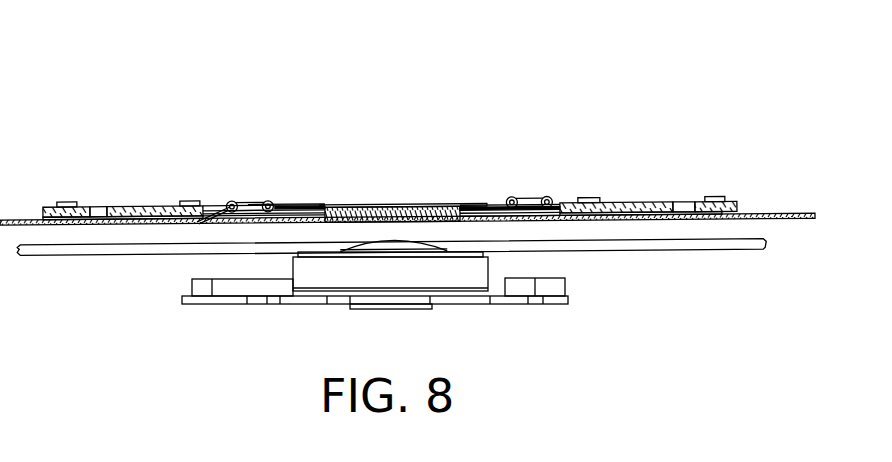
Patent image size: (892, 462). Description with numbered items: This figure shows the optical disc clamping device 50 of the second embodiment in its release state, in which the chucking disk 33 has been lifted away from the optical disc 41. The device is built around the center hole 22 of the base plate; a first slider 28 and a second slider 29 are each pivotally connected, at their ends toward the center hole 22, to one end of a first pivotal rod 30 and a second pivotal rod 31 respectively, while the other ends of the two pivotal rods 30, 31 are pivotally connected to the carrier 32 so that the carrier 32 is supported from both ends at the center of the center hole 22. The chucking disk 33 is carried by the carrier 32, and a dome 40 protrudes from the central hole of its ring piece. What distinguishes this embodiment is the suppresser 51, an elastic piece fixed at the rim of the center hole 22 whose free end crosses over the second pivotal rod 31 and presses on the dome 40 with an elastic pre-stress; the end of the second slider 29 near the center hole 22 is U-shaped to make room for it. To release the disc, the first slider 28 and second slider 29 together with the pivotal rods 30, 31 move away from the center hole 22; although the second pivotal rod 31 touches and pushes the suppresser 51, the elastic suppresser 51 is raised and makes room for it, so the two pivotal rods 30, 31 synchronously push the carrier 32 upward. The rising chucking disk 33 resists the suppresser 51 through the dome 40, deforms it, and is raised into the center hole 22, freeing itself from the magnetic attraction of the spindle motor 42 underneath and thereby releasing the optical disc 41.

The center hole 22 is at (557, 223).
The first slider 28 is at (643, 203).
The second slider 29 is at (138, 202).
The first pivotal rod 30 is at (523, 200).
The second pivotal rod 31 is at (228, 203).
The carrier 32 is at (503, 202).
The chucking disk 33 is at (413, 205).
The dome 40 is at (391, 200).
The optical disc 41 is at (677, 250).
The spindle motor 42 is at (488, 270).
The optical disc clamping device 50 is at (663, 118).
The suppresser 51 is at (336, 203).